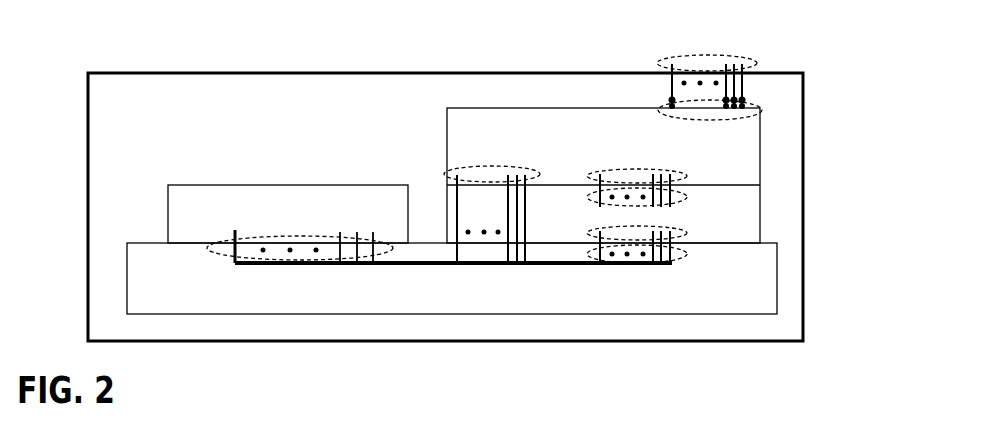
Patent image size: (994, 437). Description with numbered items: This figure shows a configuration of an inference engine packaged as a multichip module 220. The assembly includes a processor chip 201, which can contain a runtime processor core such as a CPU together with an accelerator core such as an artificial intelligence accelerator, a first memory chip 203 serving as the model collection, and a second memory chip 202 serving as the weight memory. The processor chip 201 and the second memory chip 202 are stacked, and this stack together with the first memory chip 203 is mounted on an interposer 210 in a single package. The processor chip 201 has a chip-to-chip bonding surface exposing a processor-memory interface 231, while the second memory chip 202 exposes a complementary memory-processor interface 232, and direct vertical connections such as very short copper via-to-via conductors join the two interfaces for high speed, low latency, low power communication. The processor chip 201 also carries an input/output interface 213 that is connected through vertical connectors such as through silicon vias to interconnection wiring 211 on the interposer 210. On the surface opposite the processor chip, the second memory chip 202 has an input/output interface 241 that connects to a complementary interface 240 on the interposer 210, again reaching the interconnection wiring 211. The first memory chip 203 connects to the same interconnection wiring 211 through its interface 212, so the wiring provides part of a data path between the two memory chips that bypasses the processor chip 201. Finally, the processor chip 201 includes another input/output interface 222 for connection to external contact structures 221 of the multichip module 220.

The processor chip 201 is at (762, 137).
The second memory chip 202 is at (757, 215).
The first memory chip 203 is at (185, 212).
The interposer 210 is at (768, 291).
The interconnection wiring 211 is at (383, 266).
The interface 212 is at (236, 264).
The input/output interface 213 is at (492, 168).
The multichip module 220 is at (666, 340).
The external contact structures 221 is at (730, 53).
The input/output interface 222 is at (670, 101).
The processor-memory interface 231 is at (598, 172).
The memory-processor interface 232 is at (680, 194).
The complementary interface 240 is at (596, 262).
The input/output interface 241 is at (595, 237).